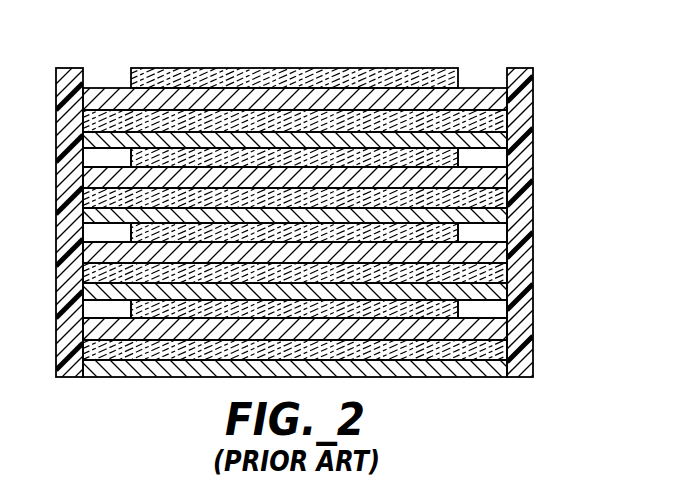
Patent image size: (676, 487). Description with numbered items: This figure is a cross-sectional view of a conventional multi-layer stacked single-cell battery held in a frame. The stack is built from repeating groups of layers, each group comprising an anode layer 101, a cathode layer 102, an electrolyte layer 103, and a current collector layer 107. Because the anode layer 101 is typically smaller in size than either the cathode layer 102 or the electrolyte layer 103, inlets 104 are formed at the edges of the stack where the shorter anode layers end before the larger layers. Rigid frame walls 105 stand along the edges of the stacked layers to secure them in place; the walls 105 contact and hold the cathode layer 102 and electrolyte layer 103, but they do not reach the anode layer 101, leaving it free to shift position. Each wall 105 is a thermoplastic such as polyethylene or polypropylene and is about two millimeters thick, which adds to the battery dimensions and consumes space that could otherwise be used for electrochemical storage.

The anode layer 101 is at (160, 77).
The cathode layer 102 is at (487, 120).
The electrolyte layer 103 is at (352, 80).
The inlet 104 is at (488, 158).
The wall 105 is at (523, 97).
The current collector layer 107 is at (110, 140).